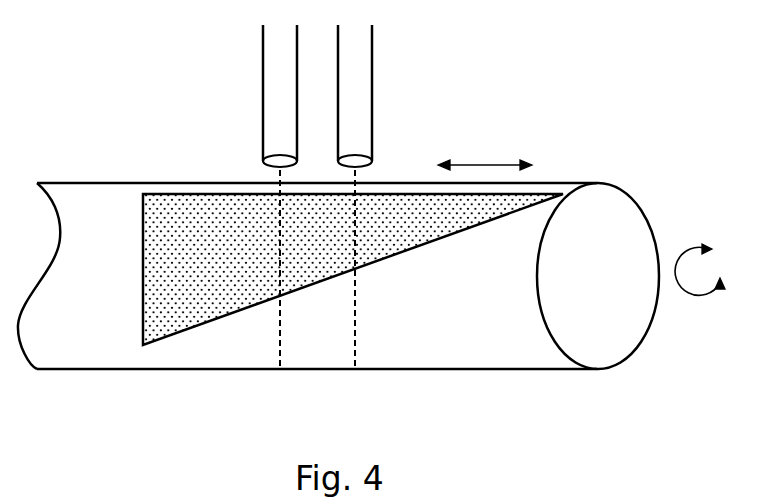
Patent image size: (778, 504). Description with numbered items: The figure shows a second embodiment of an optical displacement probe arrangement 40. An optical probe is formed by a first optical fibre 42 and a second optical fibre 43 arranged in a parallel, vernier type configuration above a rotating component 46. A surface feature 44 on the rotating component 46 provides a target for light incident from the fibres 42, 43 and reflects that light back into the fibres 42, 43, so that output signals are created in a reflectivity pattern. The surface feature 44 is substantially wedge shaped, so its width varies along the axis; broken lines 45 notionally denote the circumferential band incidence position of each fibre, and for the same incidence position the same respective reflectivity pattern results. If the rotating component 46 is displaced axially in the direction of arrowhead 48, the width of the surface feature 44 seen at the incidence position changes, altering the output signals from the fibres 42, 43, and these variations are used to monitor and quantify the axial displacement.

The optical displacement probe arrangement 40 is at (615, 100).
The first optical fibre 42 is at (263, 80).
The second optical fibre 43 is at (372, 82).
The surface feature 44 is at (143, 302).
The broken lines 45 is at (353, 350).
The rotating component 46 is at (457, 363).
The arrowhead 48 is at (490, 165).